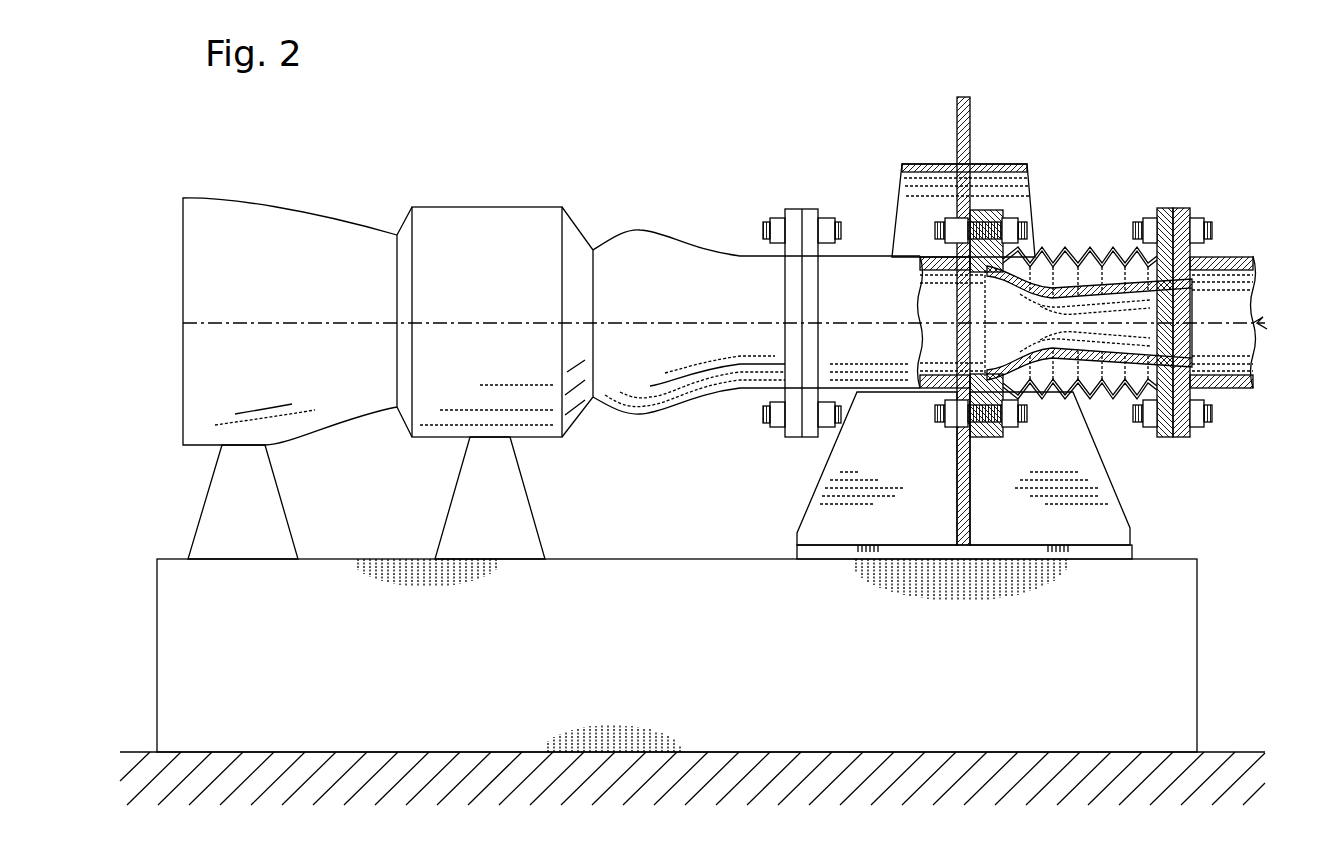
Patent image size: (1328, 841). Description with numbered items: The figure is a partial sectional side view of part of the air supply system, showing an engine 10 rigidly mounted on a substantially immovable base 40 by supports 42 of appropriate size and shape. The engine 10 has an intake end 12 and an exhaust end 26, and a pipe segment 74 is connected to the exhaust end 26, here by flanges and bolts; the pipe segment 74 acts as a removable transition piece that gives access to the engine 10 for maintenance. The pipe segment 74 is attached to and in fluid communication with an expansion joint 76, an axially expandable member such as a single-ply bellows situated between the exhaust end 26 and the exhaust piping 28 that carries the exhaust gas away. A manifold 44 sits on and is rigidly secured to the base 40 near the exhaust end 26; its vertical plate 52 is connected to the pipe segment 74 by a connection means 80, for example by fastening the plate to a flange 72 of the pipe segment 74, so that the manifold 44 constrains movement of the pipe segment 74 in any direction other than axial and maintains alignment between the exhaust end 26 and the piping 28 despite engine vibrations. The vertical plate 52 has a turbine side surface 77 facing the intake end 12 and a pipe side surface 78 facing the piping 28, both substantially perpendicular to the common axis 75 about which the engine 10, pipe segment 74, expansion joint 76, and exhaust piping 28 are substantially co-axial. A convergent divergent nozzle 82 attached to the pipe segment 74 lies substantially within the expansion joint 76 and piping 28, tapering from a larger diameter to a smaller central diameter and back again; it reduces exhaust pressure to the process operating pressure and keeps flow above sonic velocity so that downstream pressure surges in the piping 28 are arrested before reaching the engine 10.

The engine 10 is at (375, 178).
The intake end 12 is at (183, 229).
The exhaust end 26 is at (803, 305).
The exhaust piping 28 is at (1230, 257).
The substantially immovable base 40 is at (1170, 651).
The supports 42 is at (250, 490).
The manifold 44 is at (1110, 100).
The vertical plate 52 is at (970, 143).
The flange 72 is at (978, 437).
The pipe segment 74 is at (866, 268).
The common axis 75 is at (1222, 325).
The expansion joint 76 is at (1107, 395).
The turbine side surface 77 is at (950, 197).
The pipe side surface 78 is at (970, 197).
The connection means 80 is at (1022, 232).
The convergent divergent nozzle 82 is at (1100, 255).